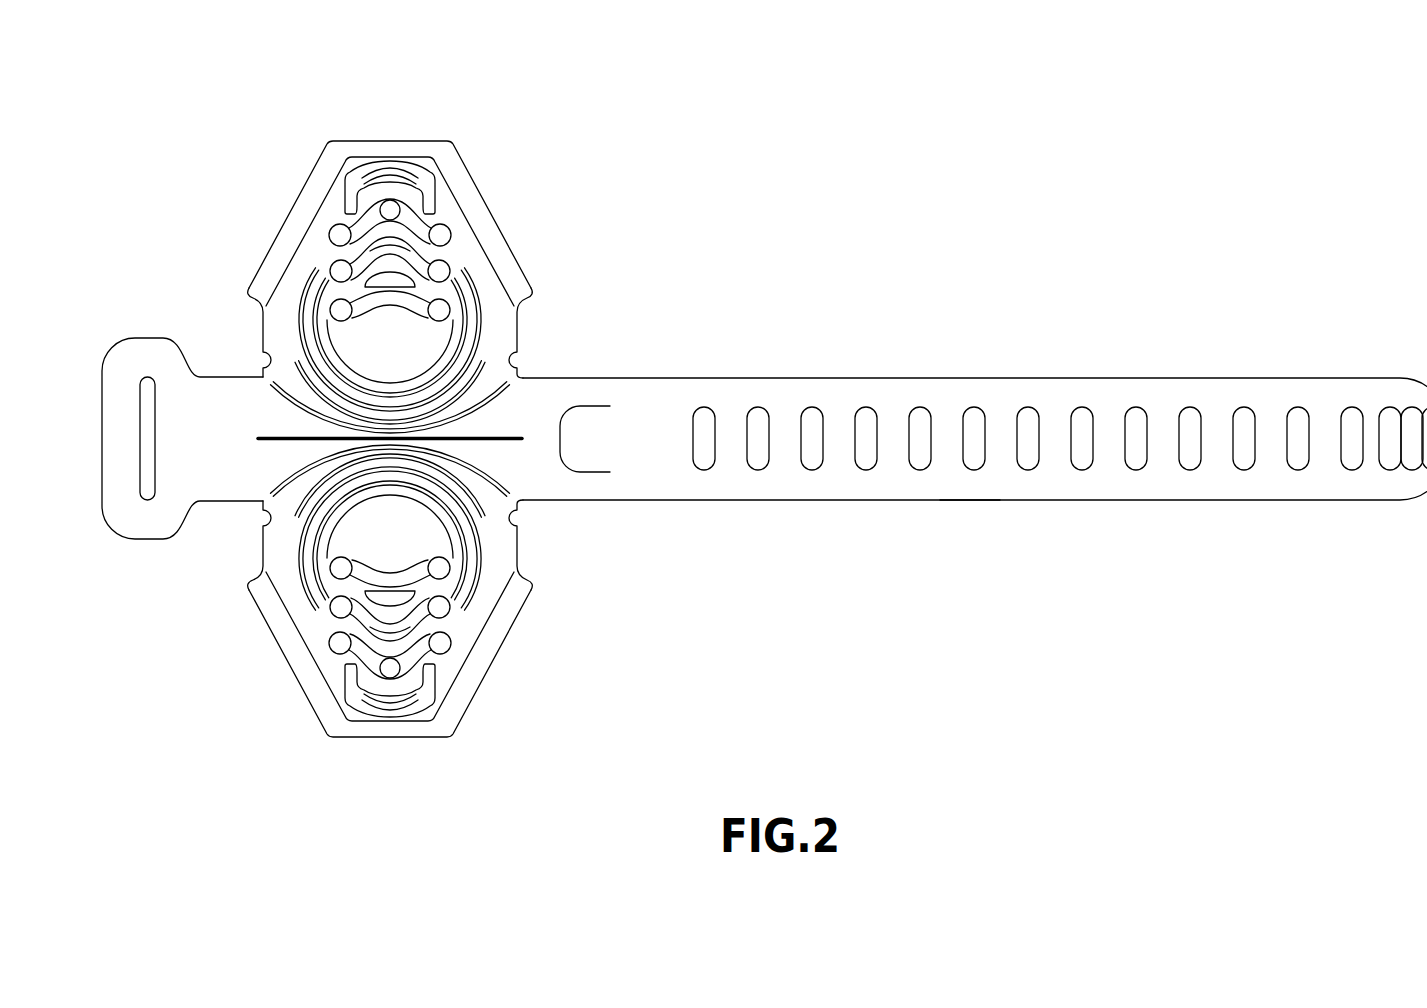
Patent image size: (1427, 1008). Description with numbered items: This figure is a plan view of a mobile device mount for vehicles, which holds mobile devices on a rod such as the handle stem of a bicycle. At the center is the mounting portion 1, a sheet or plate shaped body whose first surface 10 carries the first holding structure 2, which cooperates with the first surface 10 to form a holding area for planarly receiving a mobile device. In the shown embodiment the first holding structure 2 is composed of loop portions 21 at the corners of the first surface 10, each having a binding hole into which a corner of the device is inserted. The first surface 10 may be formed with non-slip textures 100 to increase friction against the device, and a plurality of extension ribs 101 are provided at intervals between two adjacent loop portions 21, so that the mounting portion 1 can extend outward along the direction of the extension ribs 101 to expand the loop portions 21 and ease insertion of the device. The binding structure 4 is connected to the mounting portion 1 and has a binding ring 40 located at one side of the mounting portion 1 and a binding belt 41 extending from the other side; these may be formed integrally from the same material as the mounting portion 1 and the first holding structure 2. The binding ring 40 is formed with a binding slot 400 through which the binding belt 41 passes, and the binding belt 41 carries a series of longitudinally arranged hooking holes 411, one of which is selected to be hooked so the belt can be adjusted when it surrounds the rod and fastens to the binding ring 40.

The mounting portion 1 is at (528, 330).
The first holding structure 2 is at (497, 213).
The loop portions 21 is at (500, 247).
The extension ribs 101 is at (388, 193).
The non-slip textures 100 is at (302, 328).
The first surface 10 is at (280, 455).
The binding ring 40 is at (116, 482).
The binding slot 400 is at (148, 492).
The binding structure 4 is at (906, 368).
The binding belt 41 is at (948, 483).
The hooking hole 411 is at (1136, 458).